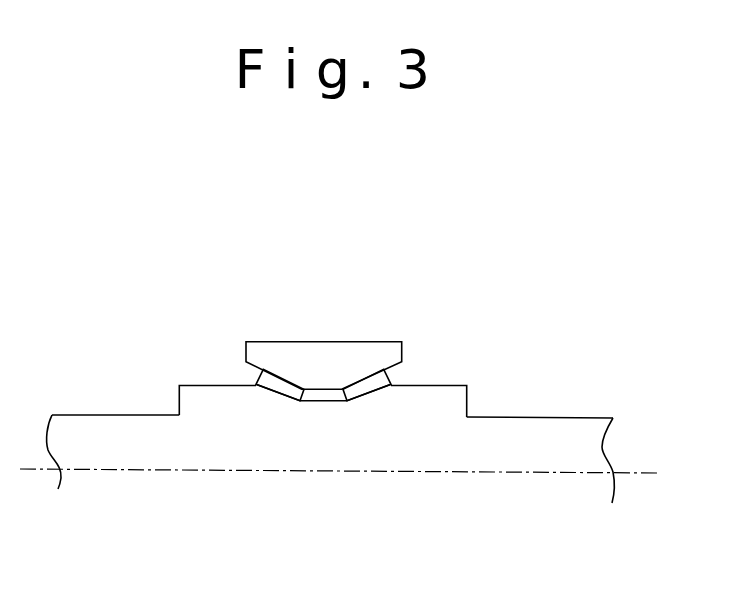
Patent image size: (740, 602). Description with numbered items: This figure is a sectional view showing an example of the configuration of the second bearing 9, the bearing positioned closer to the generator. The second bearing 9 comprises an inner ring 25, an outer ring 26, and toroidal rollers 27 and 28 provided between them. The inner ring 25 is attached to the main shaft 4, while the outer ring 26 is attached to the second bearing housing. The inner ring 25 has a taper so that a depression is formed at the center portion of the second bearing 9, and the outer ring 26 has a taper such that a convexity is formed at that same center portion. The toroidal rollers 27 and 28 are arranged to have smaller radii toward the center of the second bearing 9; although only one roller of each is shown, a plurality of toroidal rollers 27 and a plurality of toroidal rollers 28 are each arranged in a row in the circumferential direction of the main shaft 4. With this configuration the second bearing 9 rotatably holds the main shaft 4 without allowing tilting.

The main shaft 4 is at (78, 419).
The second bearing 9 is at (431, 306).
The inner ring 25 is at (197, 391).
The outer ring 26 is at (264, 343).
The toroidal roller 27 is at (269, 373).
The toroidal roller 28 is at (373, 374).